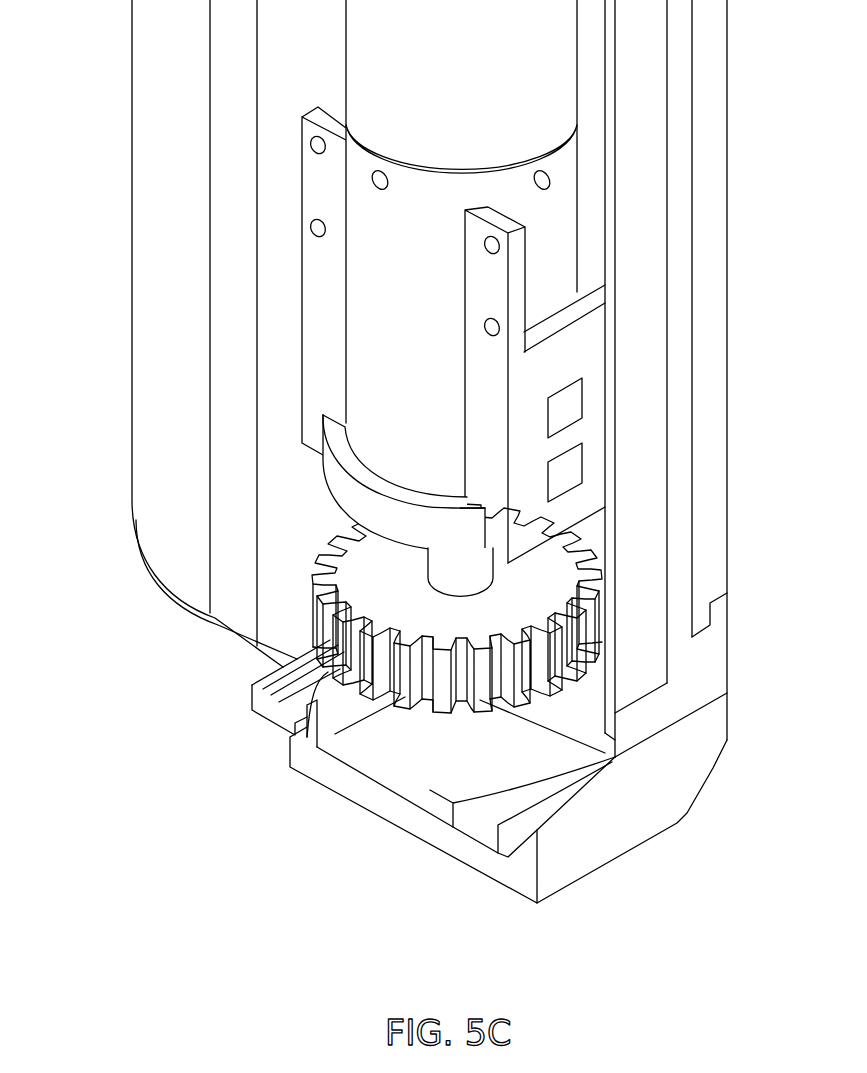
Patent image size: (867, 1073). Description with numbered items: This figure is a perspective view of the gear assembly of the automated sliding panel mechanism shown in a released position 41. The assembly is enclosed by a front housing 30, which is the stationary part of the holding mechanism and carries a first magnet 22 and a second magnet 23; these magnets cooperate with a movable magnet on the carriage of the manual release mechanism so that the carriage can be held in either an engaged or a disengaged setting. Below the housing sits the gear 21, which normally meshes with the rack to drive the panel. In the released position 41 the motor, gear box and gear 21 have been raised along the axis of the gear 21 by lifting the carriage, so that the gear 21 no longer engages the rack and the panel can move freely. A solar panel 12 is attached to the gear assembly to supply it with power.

The solar panel 12 is at (160, 400).
The gear 21 is at (427, 618).
The first magnet 22 is at (567, 413).
The second magnet 23 is at (567, 482).
The front housing 30 is at (427, 223).
The released position 41 is at (218, 743).